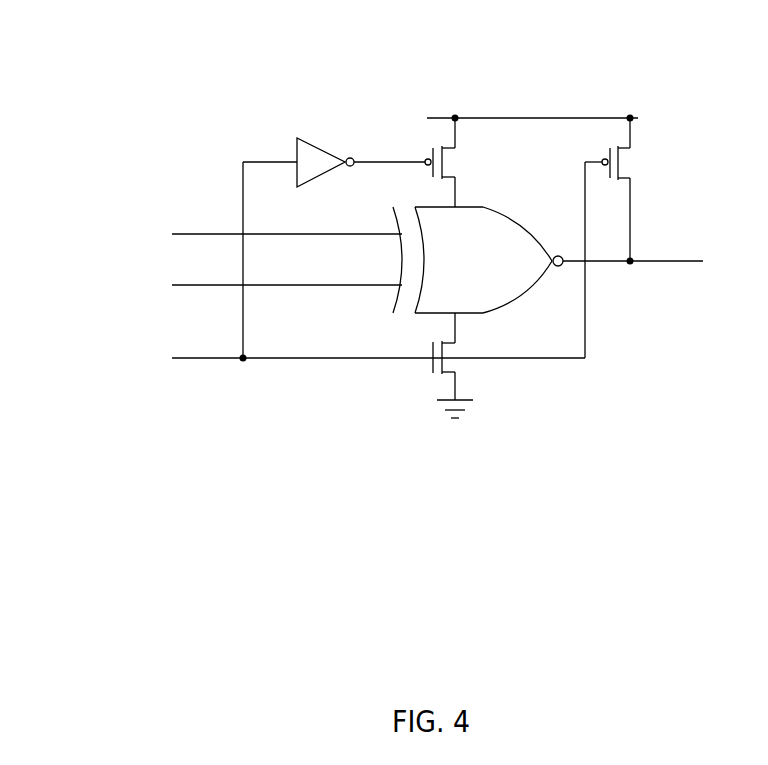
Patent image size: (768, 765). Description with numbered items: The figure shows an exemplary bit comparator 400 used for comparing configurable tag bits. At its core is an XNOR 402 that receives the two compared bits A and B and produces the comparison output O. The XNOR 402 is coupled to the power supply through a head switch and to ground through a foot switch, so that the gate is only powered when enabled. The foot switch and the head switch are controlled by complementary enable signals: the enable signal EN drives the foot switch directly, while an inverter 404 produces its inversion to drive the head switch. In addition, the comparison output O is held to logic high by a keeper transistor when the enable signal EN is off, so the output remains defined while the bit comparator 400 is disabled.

The bit comparator 400 is at (135, 42).
The XNOR 402 is at (490, 271).
The inverter 404 is at (333, 155).